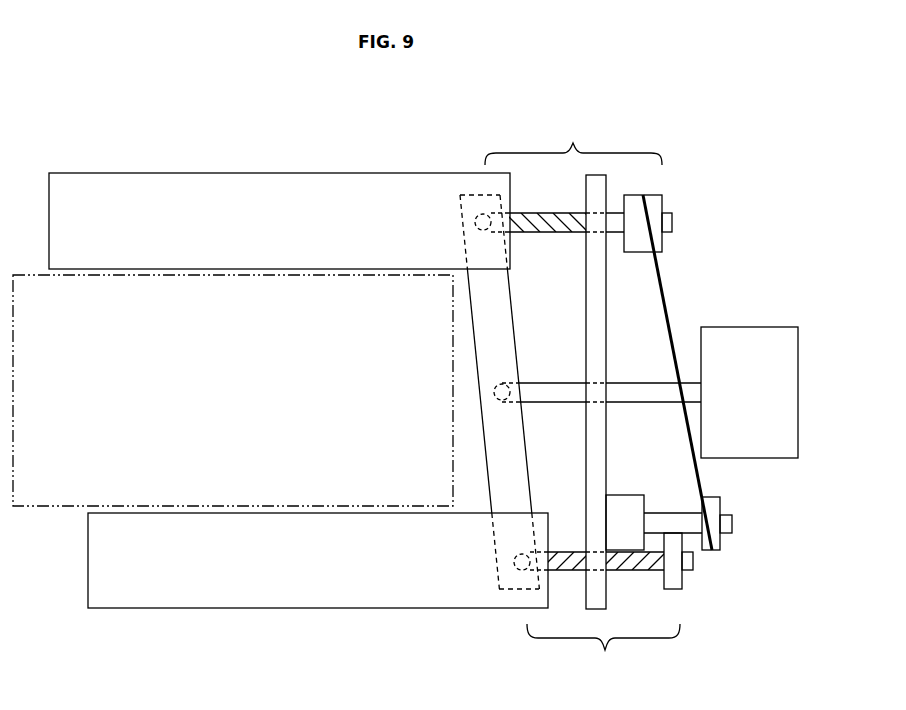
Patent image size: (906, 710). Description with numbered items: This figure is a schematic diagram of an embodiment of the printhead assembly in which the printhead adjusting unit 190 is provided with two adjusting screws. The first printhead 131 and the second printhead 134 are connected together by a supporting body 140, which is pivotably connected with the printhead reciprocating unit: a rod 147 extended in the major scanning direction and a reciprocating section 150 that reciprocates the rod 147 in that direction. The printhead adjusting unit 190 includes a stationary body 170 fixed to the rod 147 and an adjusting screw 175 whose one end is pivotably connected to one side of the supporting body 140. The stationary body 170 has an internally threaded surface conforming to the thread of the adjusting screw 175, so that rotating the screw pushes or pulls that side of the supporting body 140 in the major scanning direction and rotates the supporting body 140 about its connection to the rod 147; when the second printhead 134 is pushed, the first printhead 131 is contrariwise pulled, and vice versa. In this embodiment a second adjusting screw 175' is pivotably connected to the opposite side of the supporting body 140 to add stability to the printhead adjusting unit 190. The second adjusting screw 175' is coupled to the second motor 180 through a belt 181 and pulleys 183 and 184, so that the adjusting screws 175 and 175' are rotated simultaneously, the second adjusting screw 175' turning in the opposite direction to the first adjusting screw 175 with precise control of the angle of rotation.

The first printhead 131 is at (280, 175).
The second printhead 134 is at (318, 608).
The supporting body 140 is at (460, 195).
The rod 147 is at (653, 402).
The reciprocating section 150 is at (750, 327).
The stationary body 170 is at (597, 383).
The adjusting screw 175 is at (662, 561).
The second adjusting screw 175' is at (557, 257).
The second motor 180 is at (625, 492).
The belt 181 is at (670, 322).
The pulley 183 is at (733, 514).
The pulley 184 is at (643, 195).
The printhead adjusting unit 190 is at (582, 402).